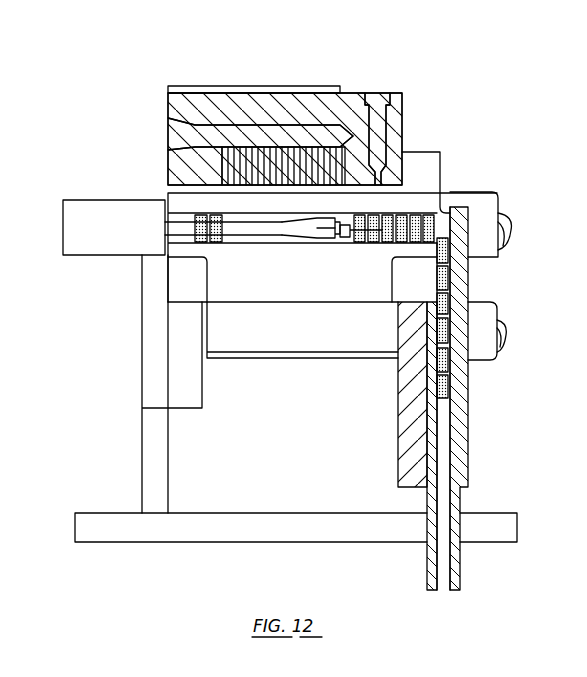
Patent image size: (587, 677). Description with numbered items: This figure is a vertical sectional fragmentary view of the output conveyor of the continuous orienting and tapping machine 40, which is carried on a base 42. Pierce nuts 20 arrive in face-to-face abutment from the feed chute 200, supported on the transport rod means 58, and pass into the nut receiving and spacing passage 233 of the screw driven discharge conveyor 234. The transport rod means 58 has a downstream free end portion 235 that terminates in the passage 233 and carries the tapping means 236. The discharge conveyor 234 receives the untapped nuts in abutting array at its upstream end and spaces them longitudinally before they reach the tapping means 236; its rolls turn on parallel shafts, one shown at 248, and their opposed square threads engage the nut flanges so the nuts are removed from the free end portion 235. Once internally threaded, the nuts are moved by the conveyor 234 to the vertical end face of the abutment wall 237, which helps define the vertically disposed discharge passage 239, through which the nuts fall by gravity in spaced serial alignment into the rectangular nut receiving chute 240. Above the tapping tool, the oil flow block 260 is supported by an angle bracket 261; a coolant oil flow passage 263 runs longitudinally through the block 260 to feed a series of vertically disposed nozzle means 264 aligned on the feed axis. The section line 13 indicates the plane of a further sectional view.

The continuous orienting and tapping machine 40 is at (253, 42).
The section line 13 is at (363, 53).
The pierce nut 20 is at (217, 243).
The base 42 is at (259, 550).
The transport rod means 58 is at (248, 228).
The feed chute 200 is at (97, 190).
The nut receiving and spacing passage 233 is at (278, 238).
The discharge conveyor 234 is at (437, 143).
The downstream free end portion 235 is at (339, 238).
The tapping means 236 is at (309, 225).
The abutment wall 237 is at (453, 202).
The discharge passage 239 is at (445, 578).
The nut receiving chute 240 is at (461, 500).
The shaft 248 is at (506, 215).
The oil flow block 260 is at (396, 83).
The angle bracket 261 is at (276, 86).
The coolant oil flow passage 263 is at (228, 130).
The nozzle means 264 is at (289, 156).